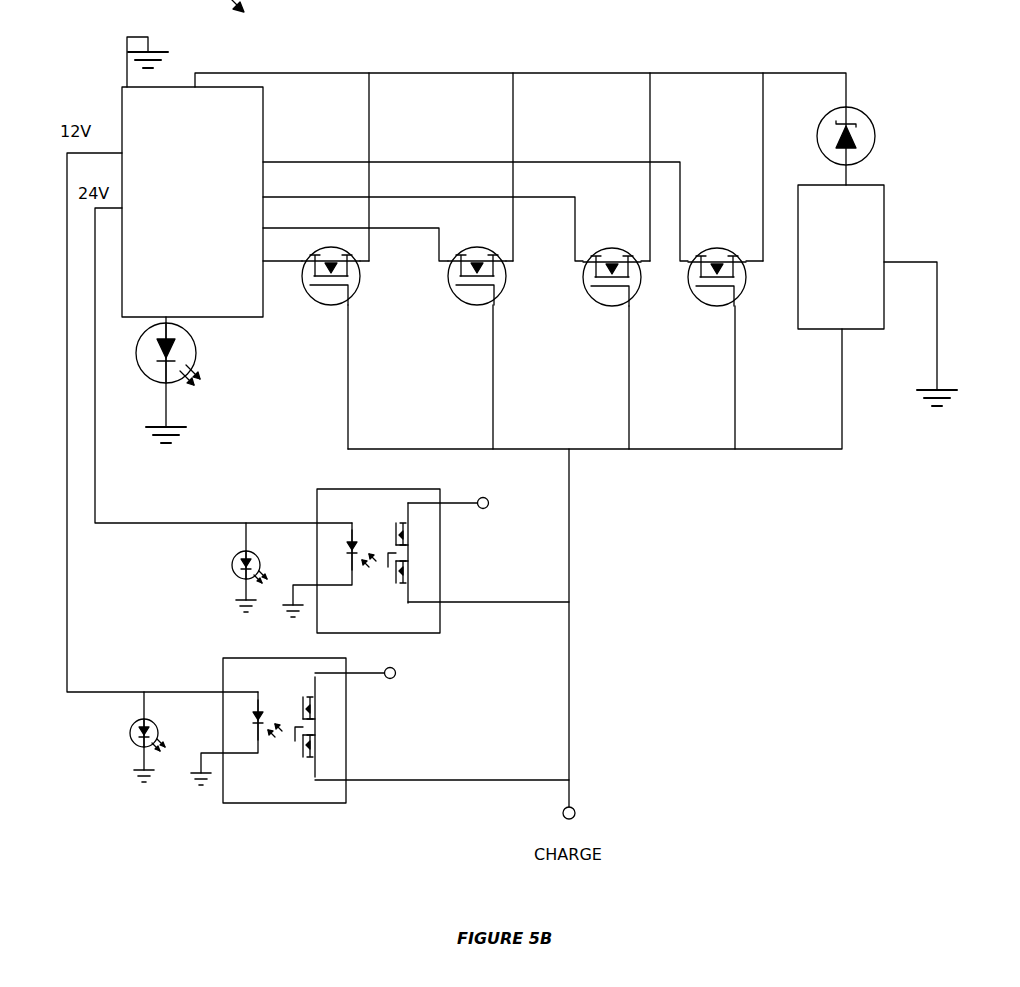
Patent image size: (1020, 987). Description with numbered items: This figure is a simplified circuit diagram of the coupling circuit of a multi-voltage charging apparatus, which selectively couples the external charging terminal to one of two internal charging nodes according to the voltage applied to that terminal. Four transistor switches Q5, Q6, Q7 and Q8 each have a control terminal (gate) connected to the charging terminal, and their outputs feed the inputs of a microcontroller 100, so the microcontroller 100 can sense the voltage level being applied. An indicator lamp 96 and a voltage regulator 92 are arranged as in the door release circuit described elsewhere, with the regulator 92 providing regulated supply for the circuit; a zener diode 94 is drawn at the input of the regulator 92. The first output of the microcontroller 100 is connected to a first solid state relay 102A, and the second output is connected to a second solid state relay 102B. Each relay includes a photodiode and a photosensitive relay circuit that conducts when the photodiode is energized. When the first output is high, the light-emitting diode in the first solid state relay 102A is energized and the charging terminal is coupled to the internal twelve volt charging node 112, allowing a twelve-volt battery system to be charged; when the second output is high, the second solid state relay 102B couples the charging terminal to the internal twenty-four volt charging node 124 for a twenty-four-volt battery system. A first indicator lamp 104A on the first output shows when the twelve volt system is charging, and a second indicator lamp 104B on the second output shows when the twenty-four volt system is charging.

The microcontroller 100 is at (263, 114).
The zener diode 94 is at (876, 137).
The voltage regulator 92 is at (884, 228).
The indicator lamp 96 is at (197, 352).
The second solid state relay 102B is at (317, 500).
The second indicator lamp 104B is at (232, 565).
The internal 24 volt charging node 124 is at (488, 499).
The first solid state relay 102A is at (223, 668).
The first indicator lamp 104A is at (130, 733).
The internal 12 volt charging node 112 is at (395, 670).
The first transistor switch Q5 is at (316, 305).
The second transistor switch Q6 is at (461, 305).
The third transistor switch Q7 is at (638, 296).
The fourth transistor switch Q8 is at (741, 296).